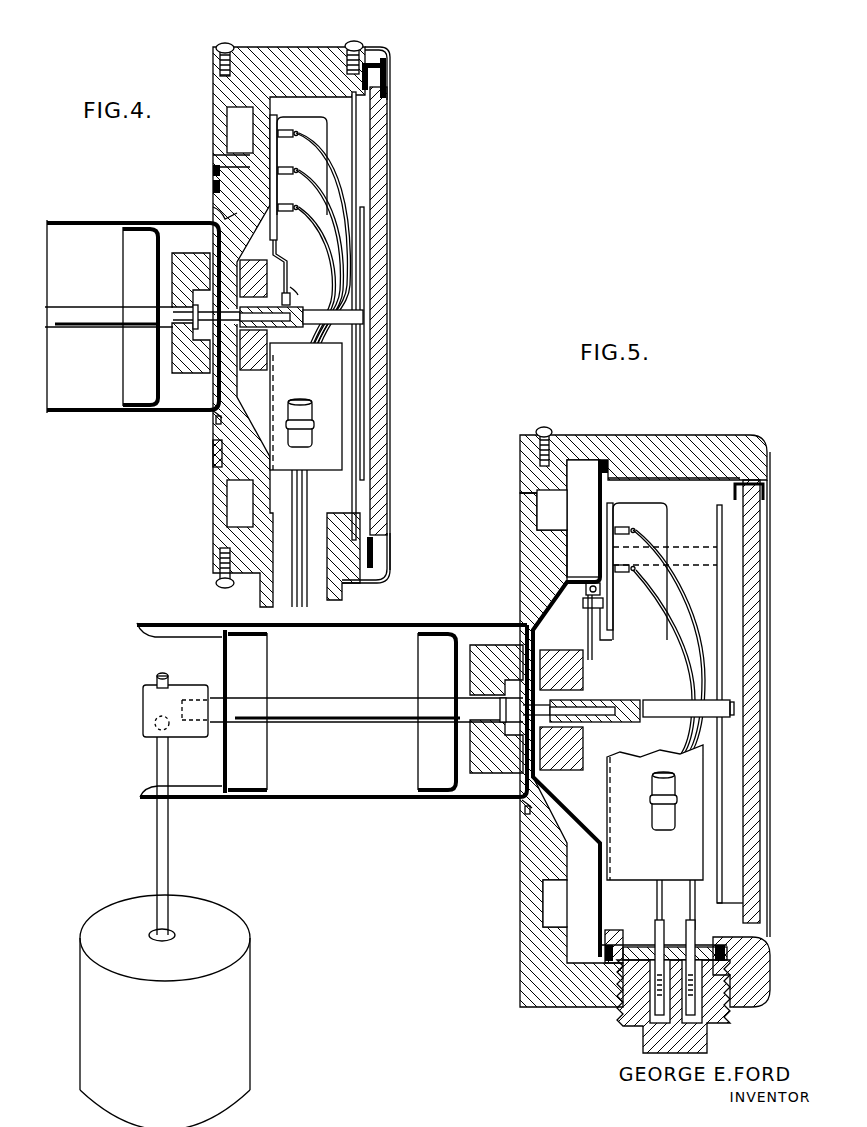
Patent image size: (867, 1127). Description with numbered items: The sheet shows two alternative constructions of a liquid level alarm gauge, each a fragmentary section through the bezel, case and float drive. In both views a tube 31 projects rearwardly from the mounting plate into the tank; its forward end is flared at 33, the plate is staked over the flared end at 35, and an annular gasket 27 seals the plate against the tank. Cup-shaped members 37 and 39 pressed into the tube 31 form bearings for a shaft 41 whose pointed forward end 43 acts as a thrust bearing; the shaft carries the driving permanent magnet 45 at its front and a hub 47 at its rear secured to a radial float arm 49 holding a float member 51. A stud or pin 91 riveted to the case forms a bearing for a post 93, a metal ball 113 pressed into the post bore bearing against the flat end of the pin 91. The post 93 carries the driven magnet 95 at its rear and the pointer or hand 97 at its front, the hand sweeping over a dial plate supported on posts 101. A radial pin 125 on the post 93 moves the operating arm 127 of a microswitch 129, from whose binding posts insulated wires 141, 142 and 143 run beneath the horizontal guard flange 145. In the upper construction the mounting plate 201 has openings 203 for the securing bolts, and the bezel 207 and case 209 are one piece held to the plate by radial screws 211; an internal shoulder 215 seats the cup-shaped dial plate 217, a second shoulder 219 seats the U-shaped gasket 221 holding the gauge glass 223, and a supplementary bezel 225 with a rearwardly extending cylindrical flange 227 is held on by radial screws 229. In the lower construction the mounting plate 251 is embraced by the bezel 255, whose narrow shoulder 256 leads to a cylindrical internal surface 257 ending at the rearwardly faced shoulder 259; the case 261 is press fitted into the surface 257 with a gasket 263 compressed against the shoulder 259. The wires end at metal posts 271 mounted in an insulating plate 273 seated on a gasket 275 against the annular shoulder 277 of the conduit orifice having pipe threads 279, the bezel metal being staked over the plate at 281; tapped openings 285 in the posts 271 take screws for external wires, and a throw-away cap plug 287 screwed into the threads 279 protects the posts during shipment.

In FIG. 4, the annular gasket 27 is at (214, 460).
In FIG. 4, the tube 31 is at (68, 412).
In FIG. 5, the tube 31 is at (392, 801).
In FIG. 4, the flared end 33 is at (210, 419).
In FIG. 5, the flared end 33 is at (522, 804).
In FIG. 4, the staked portion 35 is at (216, 426).
In FIG. 5, the staked portion 35 is at (528, 815).
In FIG. 4, the cup-shaped member 37 is at (128, 268).
In FIG. 5, the cup-shaped member 37 is at (418, 661).
In FIG. 5, the cup-shaped member 39 is at (225, 661).
In FIG. 4, the shaft 41 is at (86, 323).
In FIG. 5, the shaft 41 is at (378, 723).
In FIG. 4, the pointed forward end 43 is at (197, 371).
In FIG. 5, the pointed forward end 43 is at (513, 660).
In FIG. 4, the permanent magnet 45 is at (192, 259).
In FIG. 5, the permanent magnet 45 is at (490, 645).
In FIG. 5, the hub 47 is at (150, 727).
In FIG. 5, the radial float arm 49 is at (157, 851).
In FIG. 5, the float member 51 is at (236, 907).
In FIG. 4, the stud or pin 91 is at (276, 323).
In FIG. 5, the stud or pin 91 is at (612, 703).
In FIG. 4, the post 93 is at (363, 316).
In FIG. 4, the permanent magnet 95 is at (242, 366).
In FIG. 5, the permanent magnet 95 is at (566, 771).
In FIG. 4, the pointer or hand 97 is at (364, 396).
In FIG. 5, the pointer or hand 97 is at (723, 660).
In FIG. 5, the posts 101 is at (706, 549).
In FIG. 5, the metal ball 113 is at (616, 723).
In FIG. 4, the radially extending pin 125 is at (290, 294).
In FIG. 5, the radially extending pin 125 is at (604, 659).
In FIG. 4, the operating arm 127 is at (280, 257).
In FIG. 5, the operating arm 127 is at (590, 626).
In FIG. 4, the microswitch 129 is at (318, 128).
In FIG. 5, the microswitch 129 is at (656, 512).
In FIG. 4, the electric wire 141 is at (300, 491).
In FIG. 5, the electric wire 141 is at (690, 856).
In FIG. 5, the electric wire 142 is at (676, 862).
In FIG. 4, the electric wire 143 is at (306, 501).
In FIG. 4, the horizontal flange 145 is at (331, 425).
In FIG. 5, the horizontal flange 145 is at (622, 862).
In FIG. 4, the mounting plate 201 is at (214, 154).
In FIG. 4, the openings 203 is at (227, 119).
In FIG. 5, the openings 203 is at (537, 521).
In FIG. 4, the bezel 207 is at (262, 62).
In FIG. 4, the case 209 is at (237, 214).
In FIG. 4, the radial screws 211 is at (220, 48).
In FIG. 5, the radial screws 211 is at (544, 427).
In FIG. 4, the internal shoulder 215 is at (365, 573).
In FIG. 4, the cup-shaped dial plate 217 is at (357, 156).
In FIG. 4, the second shoulder 219 is at (348, 64).
In FIG. 4, the U-shaped gasket 221 is at (391, 100).
In FIG. 5, the U-shaped gasket 221 is at (771, 512).
In FIG. 4, the gauge glass 223 is at (379, 186).
In FIG. 5, the gauge glass 223 is at (761, 584).
In FIG. 4, the supplementary bezel 225 is at (387, 66).
In FIG. 4, the cylindrical flange 227 is at (386, 46).
In FIG. 4, the radially extending screws 229 is at (355, 41).
In FIG. 5, the mounting plate 251 is at (531, 866).
In FIG. 5, the bezel 255 is at (708, 452).
In FIG. 5, the narrow shoulder 256 is at (584, 460).
In FIG. 5, the cylindrical internal surface 257 is at (604, 462).
In FIG. 5, the rearwardly faced shoulder 259 is at (654, 452).
In FIG. 5, the case 261 is at (604, 496).
In FIG. 5, the gasket 263 is at (610, 466).
In FIG. 5, the metal posts 271 is at (649, 1002).
In FIG. 5, the insulating plate 273 is at (730, 955).
In FIG. 5, the gasket 275 is at (726, 950).
In FIG. 5, the annular shoulder 277 is at (618, 945).
In FIG. 5, the pipe threads 279 is at (761, 986).
In FIG. 5, the staked portion 281 is at (610, 976).
In FIG. 5, the tapped openings 285 is at (696, 1012).
In FIG. 5, the cap plug 287 is at (632, 1040).